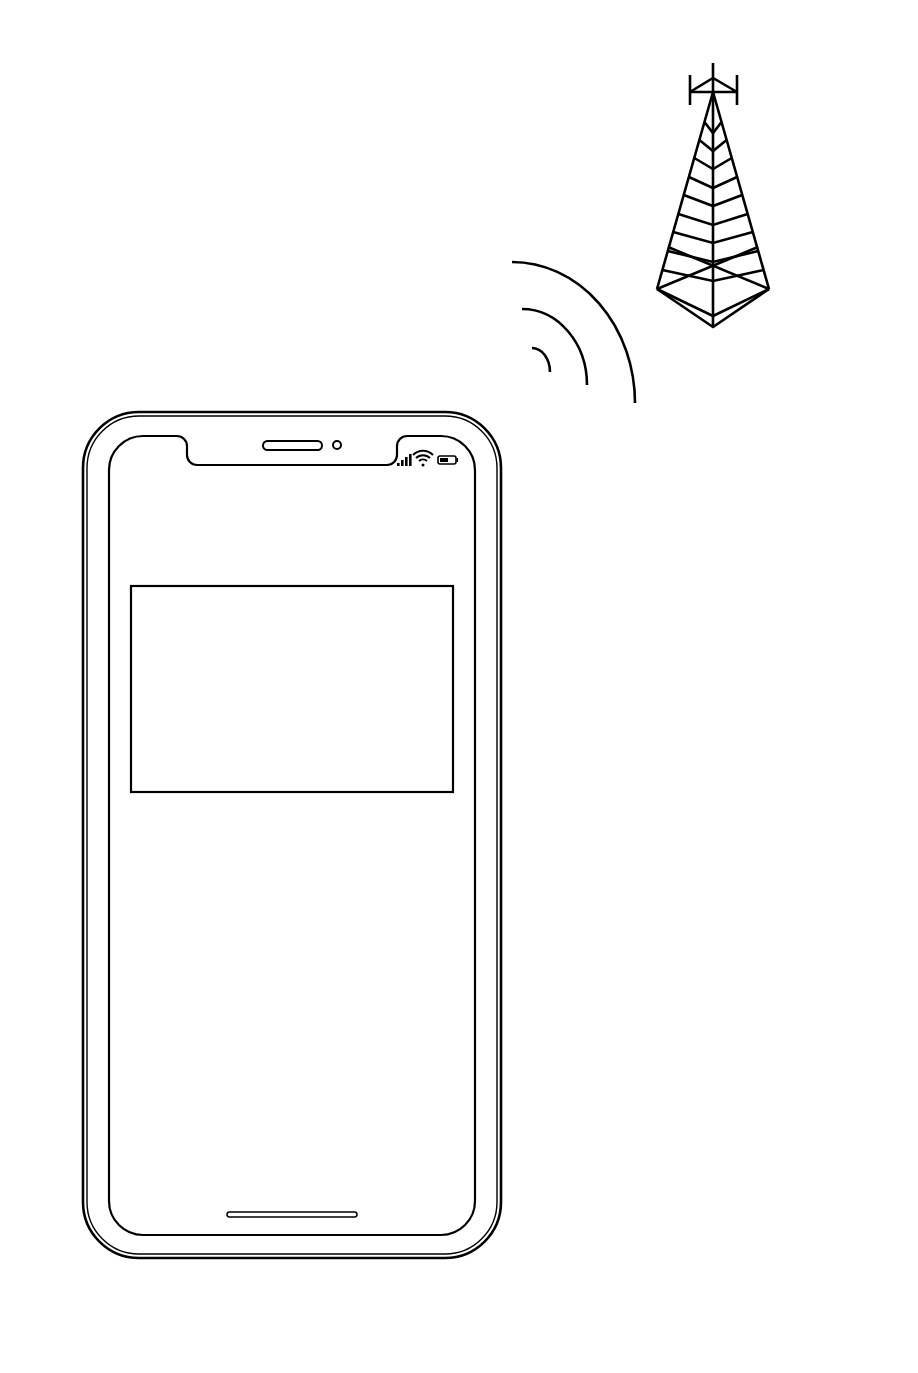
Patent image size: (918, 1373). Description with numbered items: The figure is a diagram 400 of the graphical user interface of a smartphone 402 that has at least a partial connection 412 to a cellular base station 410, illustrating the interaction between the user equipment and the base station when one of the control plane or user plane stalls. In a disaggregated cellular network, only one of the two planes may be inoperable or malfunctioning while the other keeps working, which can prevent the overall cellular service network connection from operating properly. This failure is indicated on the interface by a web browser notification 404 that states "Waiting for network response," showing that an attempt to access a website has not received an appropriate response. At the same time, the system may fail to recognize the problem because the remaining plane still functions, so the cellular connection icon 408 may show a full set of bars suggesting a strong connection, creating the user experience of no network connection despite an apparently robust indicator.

The diagram 400 is at (86, 64).
The smartphone 402 is at (293, 412).
The web browser notification 404 is at (455, 688).
The cellular connection icon 408 is at (401, 481).
The cellular base station 410 is at (746, 197).
The partial connection 412 is at (555, 262).